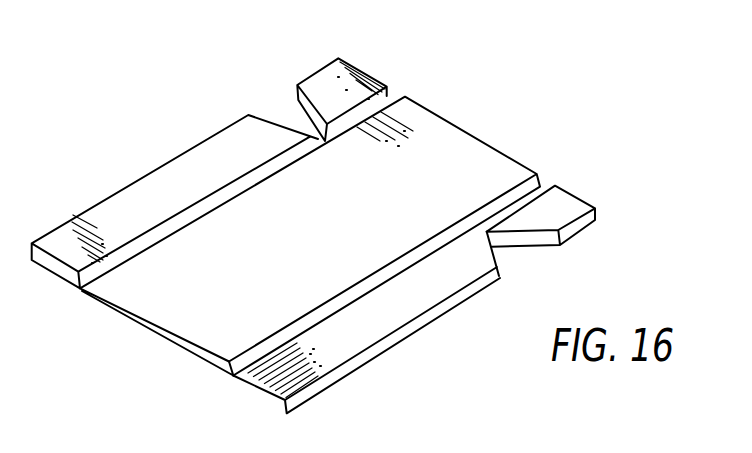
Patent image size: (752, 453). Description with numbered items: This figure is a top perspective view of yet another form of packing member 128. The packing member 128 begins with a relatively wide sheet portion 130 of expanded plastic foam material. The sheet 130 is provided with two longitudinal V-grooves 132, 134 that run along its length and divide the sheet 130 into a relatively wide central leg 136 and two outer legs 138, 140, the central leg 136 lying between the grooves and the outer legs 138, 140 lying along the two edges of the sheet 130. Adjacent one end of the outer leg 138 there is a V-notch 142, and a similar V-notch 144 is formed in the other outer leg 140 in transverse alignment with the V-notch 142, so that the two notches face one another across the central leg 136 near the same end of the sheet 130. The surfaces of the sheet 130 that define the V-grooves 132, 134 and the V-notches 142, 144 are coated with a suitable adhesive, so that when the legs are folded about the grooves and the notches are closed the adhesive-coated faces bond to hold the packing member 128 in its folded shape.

The packing member 128 is at (555, 115).
The sheet portion 130 is at (195, 332).
The V-groove 132 is at (186, 224).
The V-groove 134 is at (325, 269).
The central leg 136 is at (433, 122).
The outer leg 138 is at (117, 192).
The outer leg 140 is at (371, 351).
The V-notch 142 is at (267, 107).
The V-notch 144 is at (500, 272).